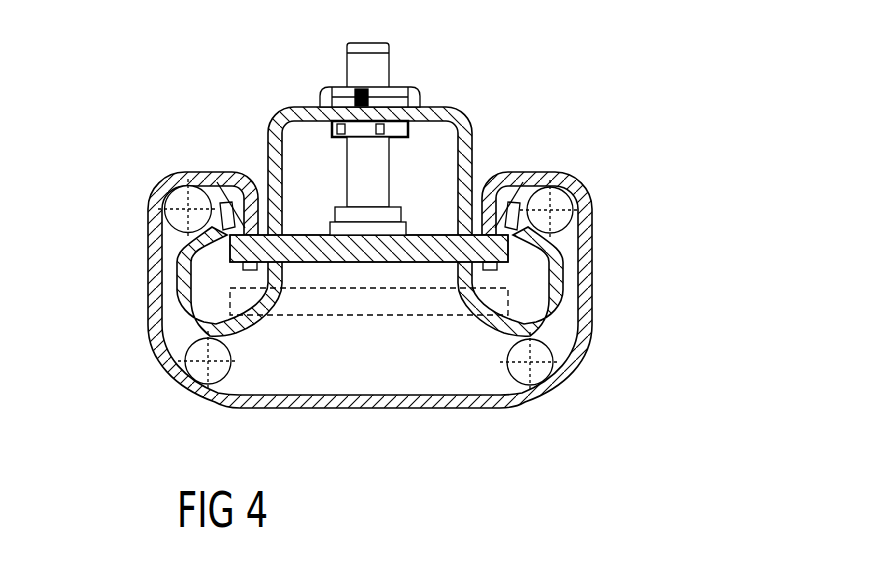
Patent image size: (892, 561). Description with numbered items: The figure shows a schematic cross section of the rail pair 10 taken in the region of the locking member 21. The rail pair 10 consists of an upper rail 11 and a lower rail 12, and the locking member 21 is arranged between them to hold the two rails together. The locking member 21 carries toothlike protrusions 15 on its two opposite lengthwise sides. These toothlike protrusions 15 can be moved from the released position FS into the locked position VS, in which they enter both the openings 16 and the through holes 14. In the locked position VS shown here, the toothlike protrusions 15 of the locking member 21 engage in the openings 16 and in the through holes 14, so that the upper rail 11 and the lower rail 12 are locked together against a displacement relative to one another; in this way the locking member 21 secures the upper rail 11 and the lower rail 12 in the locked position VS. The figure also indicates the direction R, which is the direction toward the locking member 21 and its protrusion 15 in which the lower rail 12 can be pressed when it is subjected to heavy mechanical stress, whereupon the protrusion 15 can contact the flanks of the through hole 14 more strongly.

The rail pair 10 is at (667, 178).
The upper rail 11 is at (422, 106).
The lower rail 12 is at (450, 402).
The through holes 14 is at (214, 180).
The toothlike protrusions 15 is at (178, 254).
The openings 16 is at (268, 198).
The locking member 21 is at (416, 252).
The locked position VS is at (307, 210).
The direction R is at (432, 223).
The released position FS is at (363, 317).